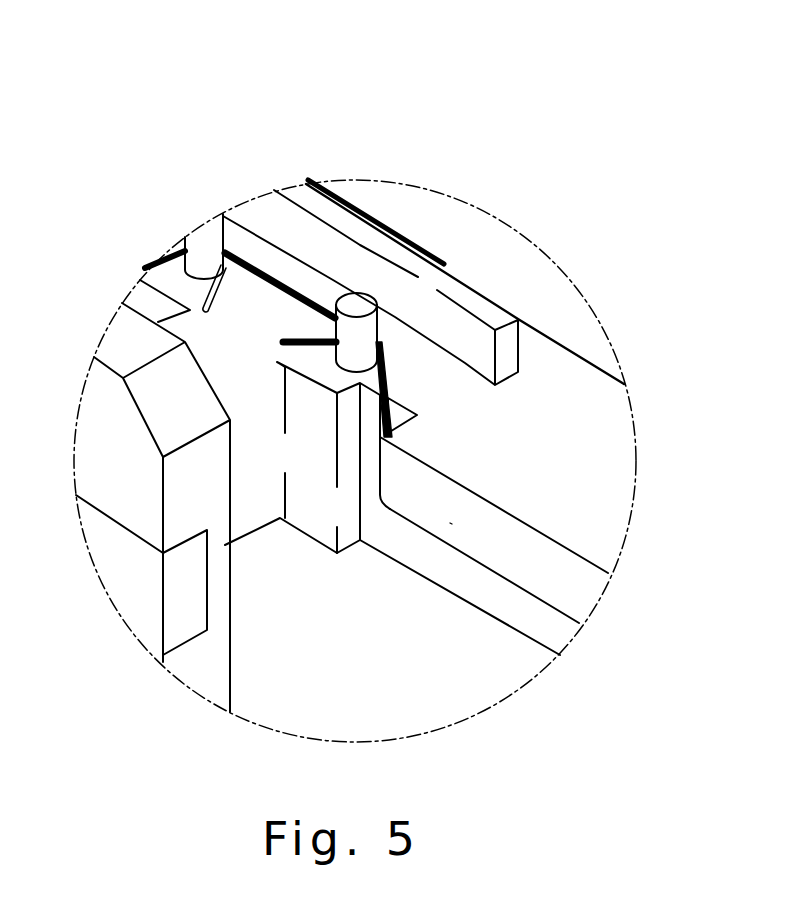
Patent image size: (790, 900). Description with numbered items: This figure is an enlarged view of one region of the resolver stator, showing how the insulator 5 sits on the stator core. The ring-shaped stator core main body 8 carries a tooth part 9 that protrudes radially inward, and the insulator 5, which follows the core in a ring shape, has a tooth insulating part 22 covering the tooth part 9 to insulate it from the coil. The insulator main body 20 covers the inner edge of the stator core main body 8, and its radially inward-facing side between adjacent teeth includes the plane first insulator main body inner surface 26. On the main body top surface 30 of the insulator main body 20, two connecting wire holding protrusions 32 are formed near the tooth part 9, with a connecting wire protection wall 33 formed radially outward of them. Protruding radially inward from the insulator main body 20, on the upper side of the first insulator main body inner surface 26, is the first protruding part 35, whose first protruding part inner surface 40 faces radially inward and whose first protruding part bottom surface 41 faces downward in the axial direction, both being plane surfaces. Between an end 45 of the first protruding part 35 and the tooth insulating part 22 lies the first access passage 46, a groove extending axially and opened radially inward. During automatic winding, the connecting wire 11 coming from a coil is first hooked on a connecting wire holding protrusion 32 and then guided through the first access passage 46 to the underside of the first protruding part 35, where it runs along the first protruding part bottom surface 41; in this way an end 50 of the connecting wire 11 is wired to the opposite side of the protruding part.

The insulator 5 is at (541, 302).
The stator core main body 8 is at (452, 228).
The tooth part 9 is at (110, 570).
The connecting wire 11 is at (293, 338).
The insulator main body 20 is at (582, 392).
The tooth insulating part 22 is at (245, 495).
The first insulator main body inner surface 26 is at (505, 613).
The main body top surface 30 is at (548, 447).
The connecting wire holding protrusion 32 is at (193, 236).
The connecting wire protection wall 33 is at (320, 200).
The first protruding part 35 is at (450, 523).
The first protruding part inner surface 40 is at (487, 537).
The first protruding part bottom surface 41 is at (565, 620).
The end of the first protruding part 45 is at (397, 487).
The first access passage 46 is at (370, 462).
The end of the connecting wire 50 is at (383, 378).